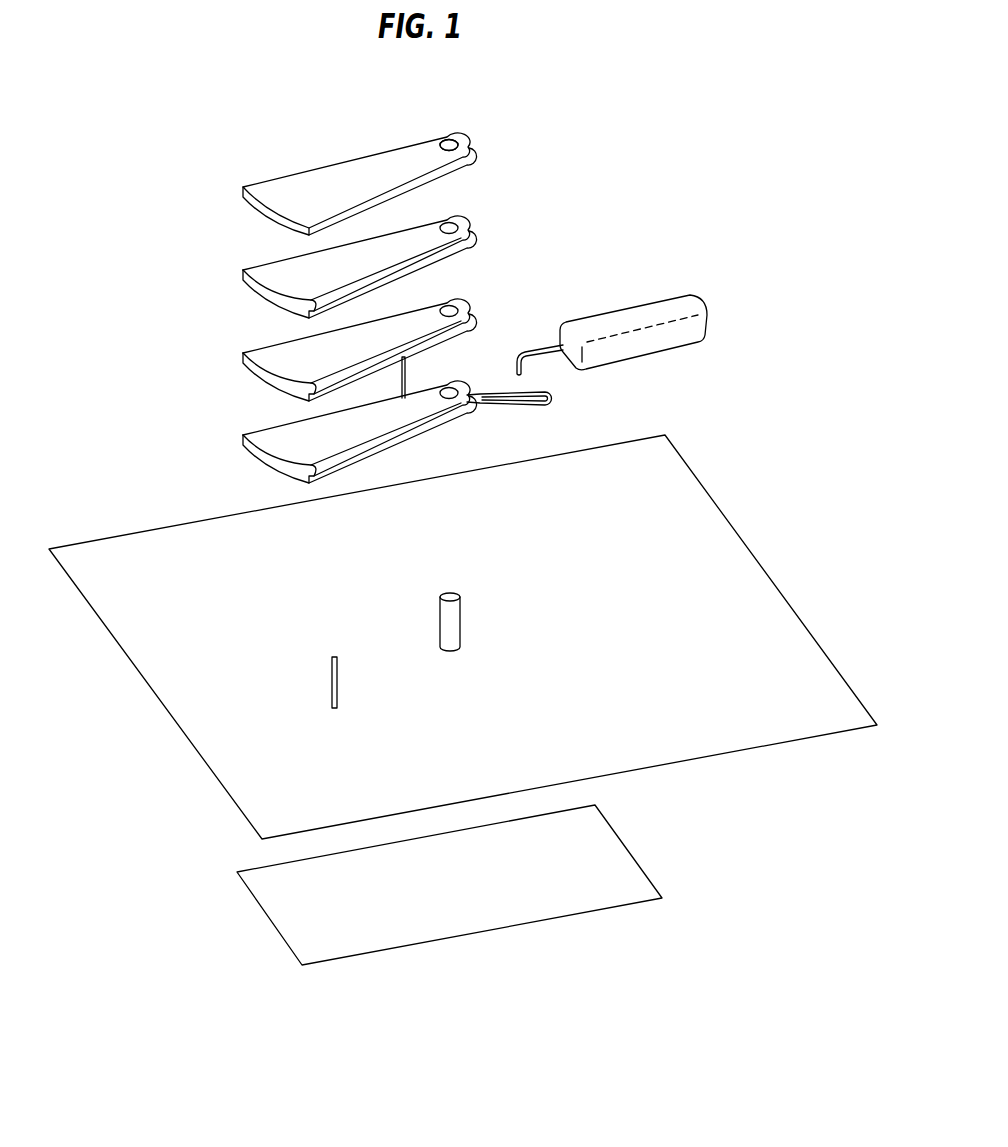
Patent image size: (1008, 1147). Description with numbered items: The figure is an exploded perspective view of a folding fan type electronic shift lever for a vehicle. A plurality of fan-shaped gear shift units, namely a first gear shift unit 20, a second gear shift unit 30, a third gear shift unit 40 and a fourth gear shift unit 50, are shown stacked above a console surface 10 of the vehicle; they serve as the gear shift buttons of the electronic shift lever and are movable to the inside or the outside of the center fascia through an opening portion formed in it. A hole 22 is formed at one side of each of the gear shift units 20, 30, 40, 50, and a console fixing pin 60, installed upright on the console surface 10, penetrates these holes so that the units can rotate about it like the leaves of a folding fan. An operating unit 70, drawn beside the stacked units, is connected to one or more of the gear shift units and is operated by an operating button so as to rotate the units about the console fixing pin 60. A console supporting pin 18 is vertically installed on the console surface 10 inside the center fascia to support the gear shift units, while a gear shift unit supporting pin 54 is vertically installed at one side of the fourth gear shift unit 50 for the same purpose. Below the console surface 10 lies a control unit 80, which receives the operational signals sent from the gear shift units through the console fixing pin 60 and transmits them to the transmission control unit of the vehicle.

The console surface 10 is at (650, 505).
The console supporting pin 18 is at (332, 682).
The first gear shift unit 20 is at (273, 190).
The hole 22 is at (449, 139).
The second gear shift unit 30 is at (273, 273).
The third gear shift unit 40 is at (273, 356).
The fourth gear shift unit 50 is at (273, 438).
The gear shift unit supporting pin 54 is at (405, 366).
The console fixing pin 60 is at (448, 622).
The operating unit 70 is at (639, 301).
The control unit 80 is at (583, 858).